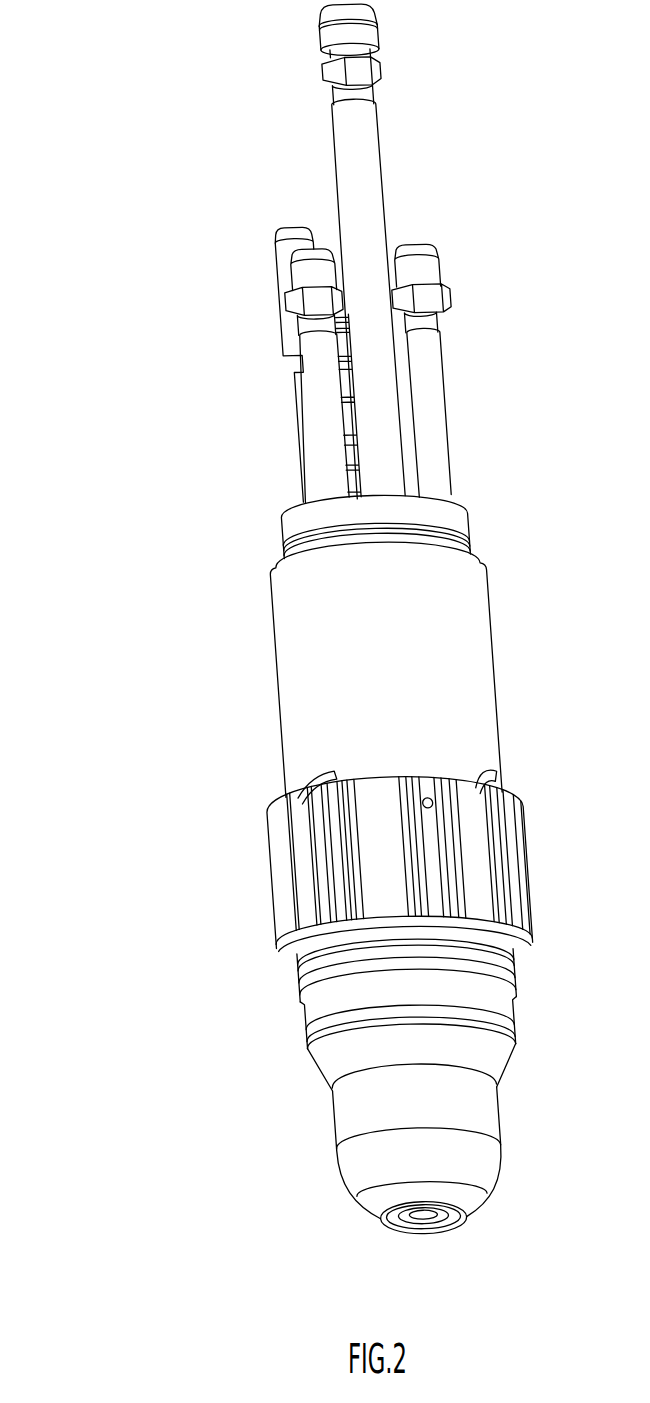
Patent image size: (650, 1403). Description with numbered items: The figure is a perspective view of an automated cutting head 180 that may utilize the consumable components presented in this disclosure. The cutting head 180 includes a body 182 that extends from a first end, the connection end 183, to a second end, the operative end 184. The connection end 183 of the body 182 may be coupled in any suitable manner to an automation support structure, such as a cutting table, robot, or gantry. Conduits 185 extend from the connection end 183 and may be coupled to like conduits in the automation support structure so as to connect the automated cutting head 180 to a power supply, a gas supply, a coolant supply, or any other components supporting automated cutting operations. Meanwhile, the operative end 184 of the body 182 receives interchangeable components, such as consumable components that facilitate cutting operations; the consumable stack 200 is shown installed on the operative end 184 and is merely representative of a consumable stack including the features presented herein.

The automated cutting head 180 is at (137, 663).
The body 182 is at (303, 697).
The connection end 183 is at (283, 533).
The operative end 184 is at (287, 792).
The conduits 185 is at (300, 367).
The consumable stack 200 is at (358, 1108).